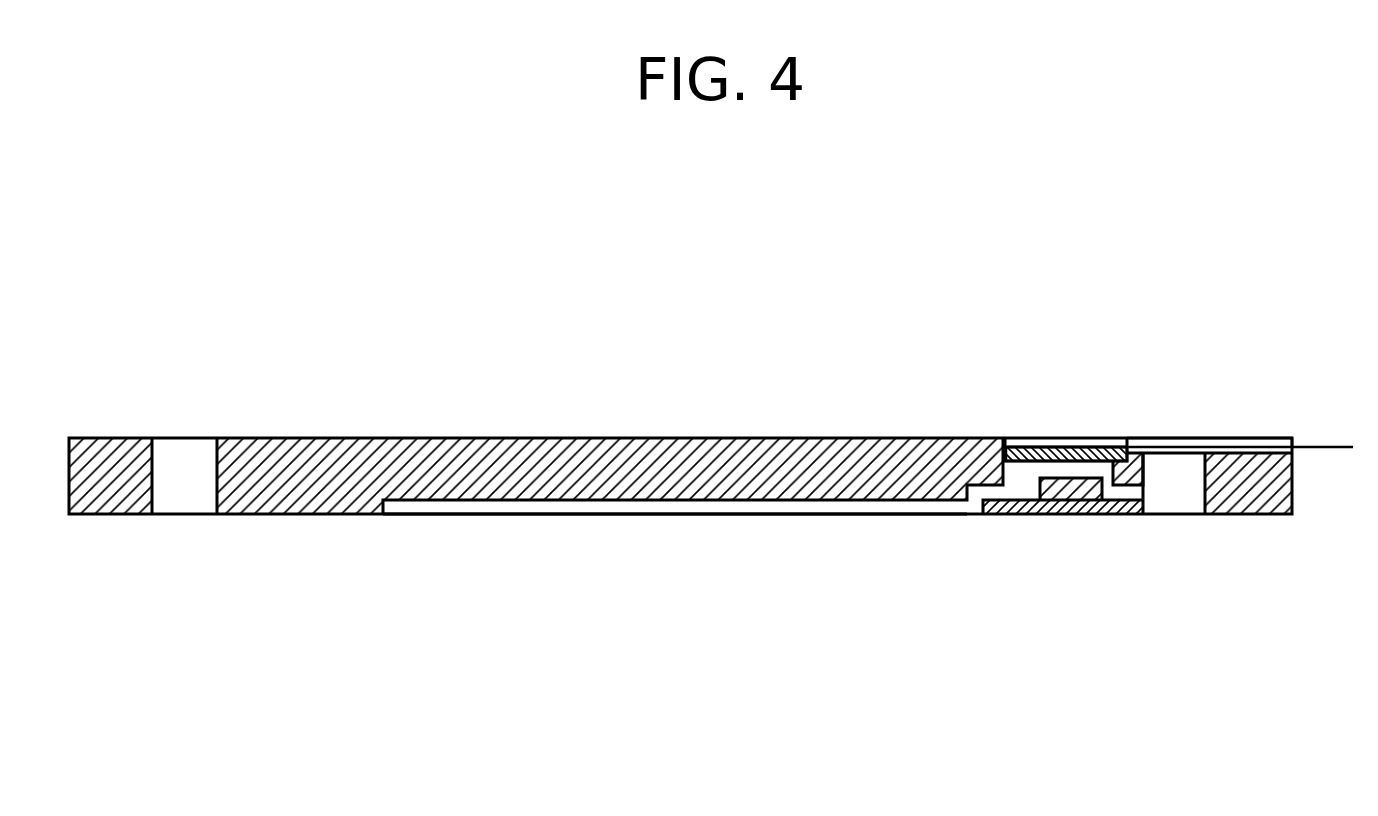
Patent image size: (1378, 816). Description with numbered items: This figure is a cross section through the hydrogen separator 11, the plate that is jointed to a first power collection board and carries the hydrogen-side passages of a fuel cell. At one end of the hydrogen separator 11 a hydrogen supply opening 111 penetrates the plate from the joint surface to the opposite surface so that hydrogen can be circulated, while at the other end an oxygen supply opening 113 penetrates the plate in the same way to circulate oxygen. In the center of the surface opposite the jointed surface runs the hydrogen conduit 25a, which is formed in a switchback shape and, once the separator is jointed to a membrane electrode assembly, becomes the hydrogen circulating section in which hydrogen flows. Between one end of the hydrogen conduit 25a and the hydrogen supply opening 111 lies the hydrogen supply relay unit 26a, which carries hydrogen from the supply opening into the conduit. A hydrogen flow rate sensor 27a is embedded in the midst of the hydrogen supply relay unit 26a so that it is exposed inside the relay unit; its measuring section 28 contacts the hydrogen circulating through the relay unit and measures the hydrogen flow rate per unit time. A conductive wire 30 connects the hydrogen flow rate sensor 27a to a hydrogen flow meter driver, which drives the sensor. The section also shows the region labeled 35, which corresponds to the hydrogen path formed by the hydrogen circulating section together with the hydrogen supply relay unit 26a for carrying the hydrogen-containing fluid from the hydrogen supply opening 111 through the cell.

The hydrogen separator 11 is at (1113, 308).
The oxygen supply opening 113 is at (192, 505).
The hydrogen conduit 25a is at (700, 507).
The reservoir channel 35 is at (893, 512).
The hydrogen supply relay unit 26a is at (1036, 447).
The hydrogen flow rate sensor 27a is at (1108, 448).
The measuring section 28 is at (1074, 463).
The hydrogen supply opening 111 is at (1175, 492).
The conductive wire 30 is at (1318, 447).